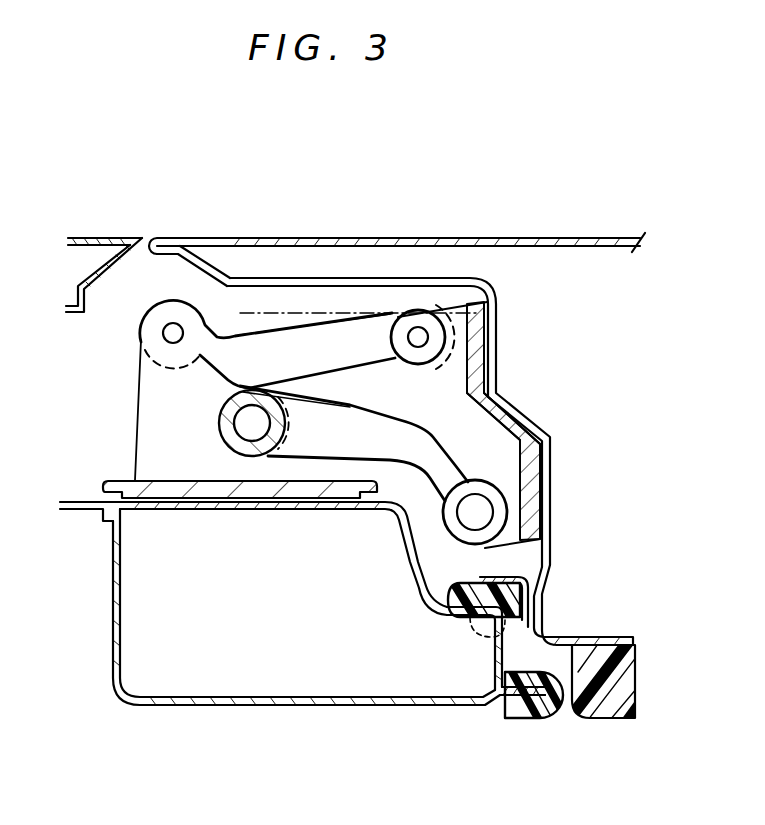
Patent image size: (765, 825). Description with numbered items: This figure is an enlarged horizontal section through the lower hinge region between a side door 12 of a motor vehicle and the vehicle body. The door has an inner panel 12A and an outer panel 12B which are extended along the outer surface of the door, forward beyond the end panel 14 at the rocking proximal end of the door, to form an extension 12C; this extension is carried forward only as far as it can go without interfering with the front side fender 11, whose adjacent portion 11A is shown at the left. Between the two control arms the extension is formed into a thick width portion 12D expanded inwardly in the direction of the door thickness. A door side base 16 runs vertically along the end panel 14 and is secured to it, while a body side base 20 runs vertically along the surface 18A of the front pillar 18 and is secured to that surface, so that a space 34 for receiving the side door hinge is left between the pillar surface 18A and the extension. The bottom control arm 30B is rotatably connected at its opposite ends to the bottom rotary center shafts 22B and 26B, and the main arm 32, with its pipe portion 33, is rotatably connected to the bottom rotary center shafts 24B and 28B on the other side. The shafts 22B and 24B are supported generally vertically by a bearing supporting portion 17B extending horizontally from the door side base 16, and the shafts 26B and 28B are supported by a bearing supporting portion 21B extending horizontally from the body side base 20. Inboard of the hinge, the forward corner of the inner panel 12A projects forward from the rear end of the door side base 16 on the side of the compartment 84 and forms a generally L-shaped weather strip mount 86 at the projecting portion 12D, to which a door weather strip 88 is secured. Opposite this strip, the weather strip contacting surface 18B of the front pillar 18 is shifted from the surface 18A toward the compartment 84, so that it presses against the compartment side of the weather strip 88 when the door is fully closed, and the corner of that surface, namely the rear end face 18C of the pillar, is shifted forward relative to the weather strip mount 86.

The front side fender 11 is at (95, 238).
The bent portion of frame member 11A is at (140, 240).
The side door 12 is at (467, 238).
The inner panel 12A is at (620, 637).
The outer panel 12B is at (287, 238).
The extension 12C is at (227, 257).
The thick width portion 12D is at (360, 310).
The end panel 14 is at (497, 333).
The door side base 16 is at (550, 443).
The bearing supporting portion 17B is at (460, 423).
The front pillar 18 is at (247, 713).
The surface of front pillar 18A is at (98, 502).
The weather strip contacting surface 18B is at (462, 615).
The rear end face 18C is at (507, 650).
The body side base 20 is at (120, 480).
The bearing supporting portion 21B is at (157, 402).
The bottom rotary center shaft 22B is at (418, 337).
The bottom rotary center shaft 24B is at (480, 512).
The bottom rotary center shaft 26B is at (173, 337).
The bottom rotary center shaft 28B is at (252, 423).
The bottom control arm 30B is at (233, 350).
The main arm 32 is at (347, 417).
The pipe portion 33 is at (277, 393).
The space 34 is at (330, 323).
The compartment 84 is at (450, 759).
The weather strip mount 86 is at (484, 579).
The door weather strip 88 is at (460, 593).